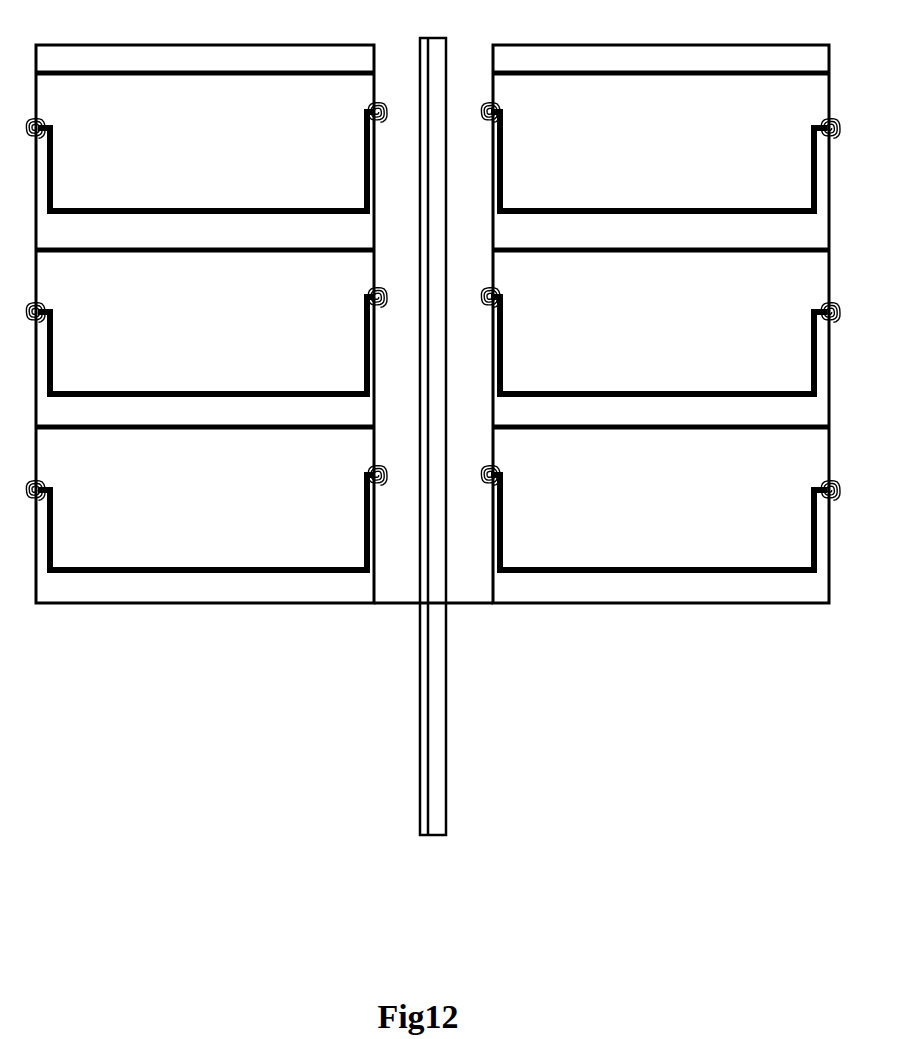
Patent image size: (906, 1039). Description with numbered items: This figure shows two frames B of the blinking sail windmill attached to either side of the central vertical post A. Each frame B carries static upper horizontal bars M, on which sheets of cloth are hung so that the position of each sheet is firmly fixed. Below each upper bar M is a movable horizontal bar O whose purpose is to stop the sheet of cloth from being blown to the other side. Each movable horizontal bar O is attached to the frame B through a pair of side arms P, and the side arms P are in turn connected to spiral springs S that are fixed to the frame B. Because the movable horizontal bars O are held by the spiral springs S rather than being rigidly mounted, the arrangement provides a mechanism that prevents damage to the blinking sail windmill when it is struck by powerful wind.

The frame B is at (49, 604).
The movable horizontal bar O is at (117, 573).
The static upper horizontal bar M is at (219, 429).
The central vertical post A is at (419, 823).
The side arm P is at (808, 531).
The spiral spring S is at (846, 502).